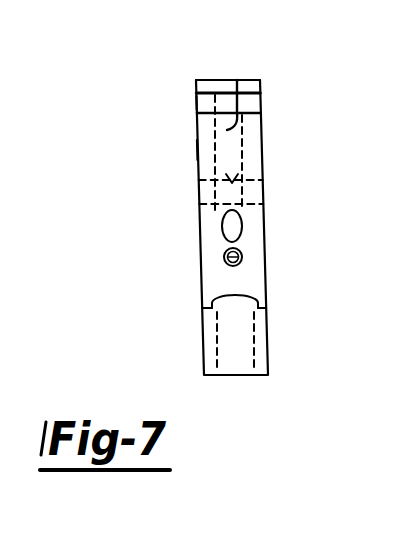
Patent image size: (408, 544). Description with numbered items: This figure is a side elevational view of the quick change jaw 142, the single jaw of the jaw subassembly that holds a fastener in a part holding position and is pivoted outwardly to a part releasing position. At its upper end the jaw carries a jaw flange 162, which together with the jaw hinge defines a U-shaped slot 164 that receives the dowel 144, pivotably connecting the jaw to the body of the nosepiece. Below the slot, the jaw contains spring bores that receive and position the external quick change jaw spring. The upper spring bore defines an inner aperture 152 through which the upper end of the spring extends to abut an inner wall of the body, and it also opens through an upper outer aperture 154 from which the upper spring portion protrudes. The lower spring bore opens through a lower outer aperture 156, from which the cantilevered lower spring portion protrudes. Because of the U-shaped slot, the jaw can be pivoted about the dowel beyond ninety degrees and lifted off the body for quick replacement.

The jaw 142 is at (255, 270).
The dowel 144 is at (197, 153).
The inner aperture 152 is at (237, 80).
The upper outer aperture 154 is at (222, 219).
The lower outer aperture 156 is at (224, 256).
The jaw flange 162 is at (199, 84).
The U-shaped slot 164 is at (195, 106).